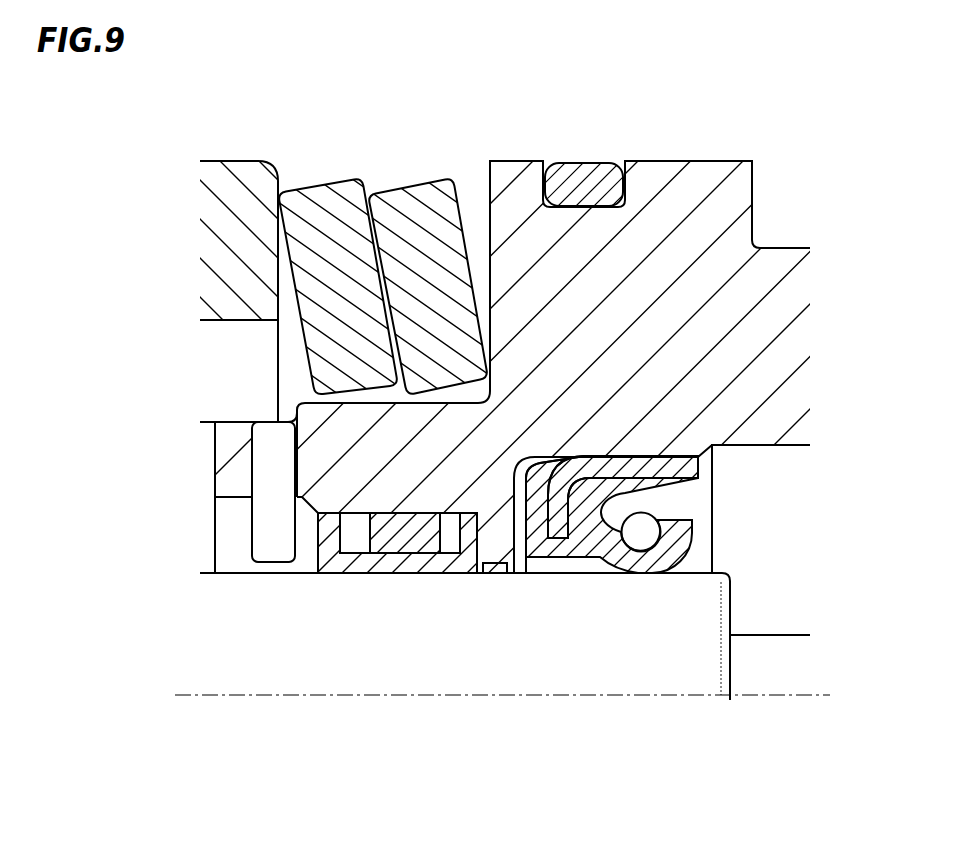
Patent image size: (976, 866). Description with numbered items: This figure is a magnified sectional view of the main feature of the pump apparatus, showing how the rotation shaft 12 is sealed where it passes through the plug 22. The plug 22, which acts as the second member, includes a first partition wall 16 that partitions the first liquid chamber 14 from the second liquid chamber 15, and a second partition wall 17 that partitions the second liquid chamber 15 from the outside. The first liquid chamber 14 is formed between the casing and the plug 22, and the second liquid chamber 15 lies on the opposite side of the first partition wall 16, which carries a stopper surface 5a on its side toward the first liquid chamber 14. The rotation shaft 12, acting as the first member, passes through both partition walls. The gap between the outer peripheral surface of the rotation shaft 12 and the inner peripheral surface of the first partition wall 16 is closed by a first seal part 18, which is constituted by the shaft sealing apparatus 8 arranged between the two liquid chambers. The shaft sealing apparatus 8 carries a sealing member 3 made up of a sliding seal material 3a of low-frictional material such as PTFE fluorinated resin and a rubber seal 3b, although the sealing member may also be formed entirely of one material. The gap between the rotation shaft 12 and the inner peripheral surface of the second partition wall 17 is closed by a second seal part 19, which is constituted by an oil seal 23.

The sealing member 3 is at (338, 770).
The sliding seal material 3a is at (330, 552).
The rubber seal 3b is at (397, 530).
The stopper surface 5a is at (457, 555).
The shaft sealing apparatus 8 is at (388, 608).
The rotation shaft 12 is at (225, 662).
The first liquid chamber 14 is at (307, 517).
The second liquid chamber 15 is at (517, 507).
The first partition wall 16 is at (427, 507).
The second partition wall 17 is at (682, 455).
The first seal part 18 is at (392, 468).
The second seal part 19 is at (665, 414).
The plug 22 is at (740, 183).
The oil seal 23 is at (641, 573).